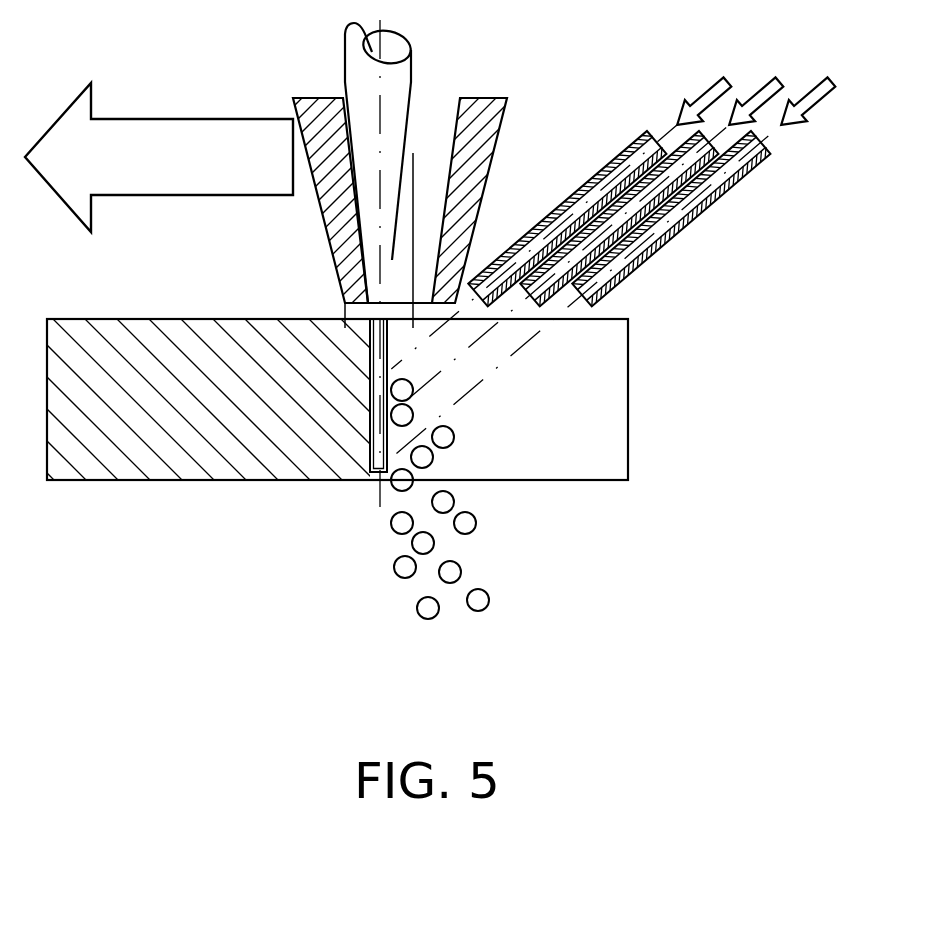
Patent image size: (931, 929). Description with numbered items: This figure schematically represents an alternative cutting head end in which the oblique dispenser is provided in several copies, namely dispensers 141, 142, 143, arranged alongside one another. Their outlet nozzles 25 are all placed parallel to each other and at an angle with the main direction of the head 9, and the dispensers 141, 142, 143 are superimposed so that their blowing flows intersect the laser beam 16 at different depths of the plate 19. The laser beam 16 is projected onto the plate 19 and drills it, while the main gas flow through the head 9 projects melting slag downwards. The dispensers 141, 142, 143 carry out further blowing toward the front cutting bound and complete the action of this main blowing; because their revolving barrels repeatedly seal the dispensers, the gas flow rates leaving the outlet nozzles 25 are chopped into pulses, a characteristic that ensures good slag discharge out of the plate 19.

The head 9 is at (509, 118).
The first oblique dispenser 141 is at (577, 190).
The second oblique dispenser 142 is at (672, 153).
The third oblique dispenser 143 is at (717, 201).
The outlet nozzle 25 is at (523, 274).
The plate 19 is at (105, 453).
The laser beam 16 is at (375, 452).